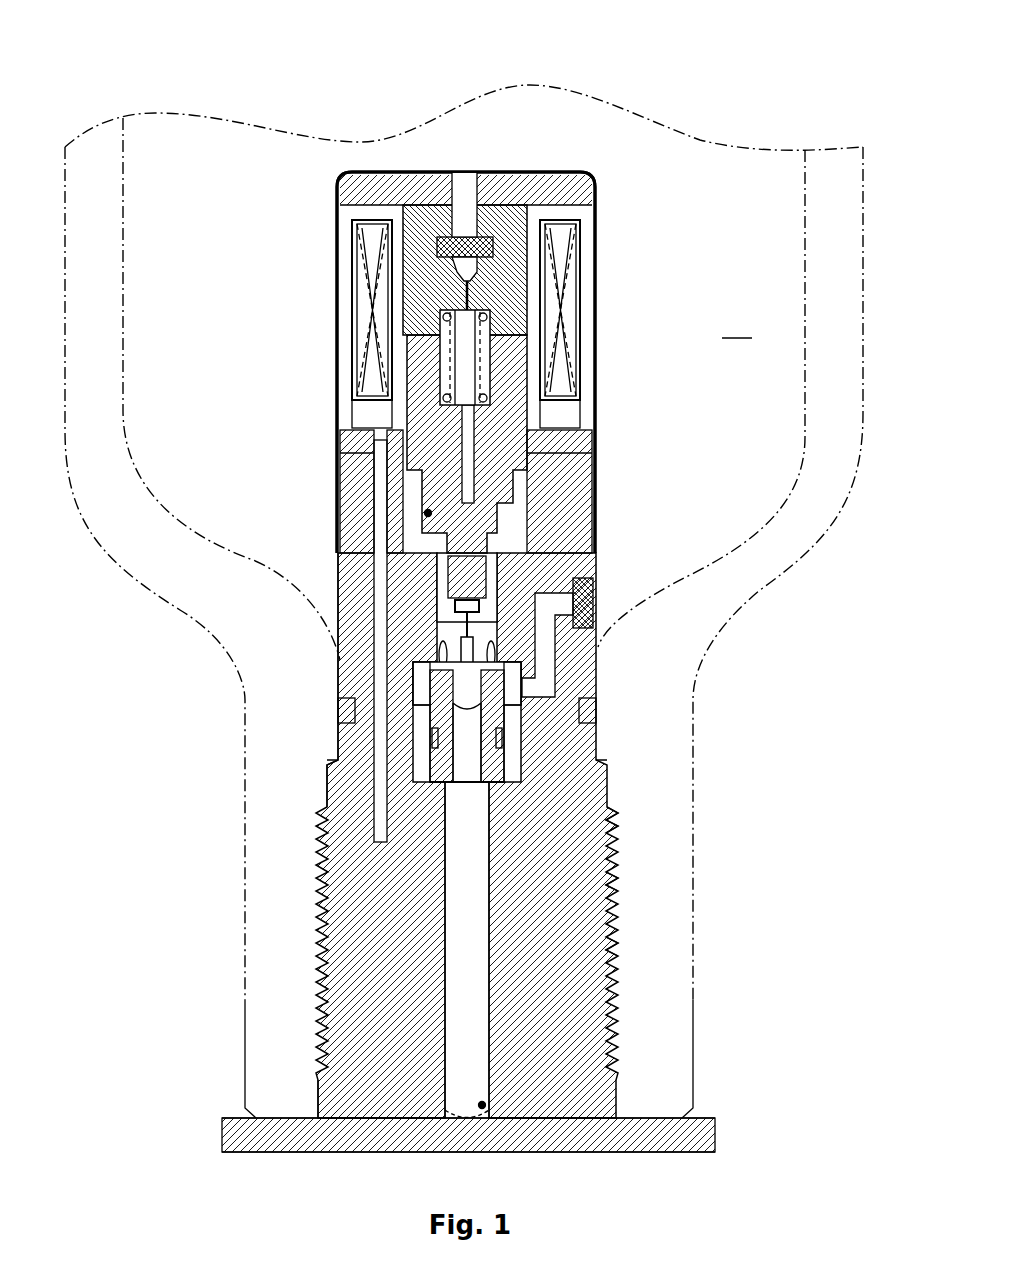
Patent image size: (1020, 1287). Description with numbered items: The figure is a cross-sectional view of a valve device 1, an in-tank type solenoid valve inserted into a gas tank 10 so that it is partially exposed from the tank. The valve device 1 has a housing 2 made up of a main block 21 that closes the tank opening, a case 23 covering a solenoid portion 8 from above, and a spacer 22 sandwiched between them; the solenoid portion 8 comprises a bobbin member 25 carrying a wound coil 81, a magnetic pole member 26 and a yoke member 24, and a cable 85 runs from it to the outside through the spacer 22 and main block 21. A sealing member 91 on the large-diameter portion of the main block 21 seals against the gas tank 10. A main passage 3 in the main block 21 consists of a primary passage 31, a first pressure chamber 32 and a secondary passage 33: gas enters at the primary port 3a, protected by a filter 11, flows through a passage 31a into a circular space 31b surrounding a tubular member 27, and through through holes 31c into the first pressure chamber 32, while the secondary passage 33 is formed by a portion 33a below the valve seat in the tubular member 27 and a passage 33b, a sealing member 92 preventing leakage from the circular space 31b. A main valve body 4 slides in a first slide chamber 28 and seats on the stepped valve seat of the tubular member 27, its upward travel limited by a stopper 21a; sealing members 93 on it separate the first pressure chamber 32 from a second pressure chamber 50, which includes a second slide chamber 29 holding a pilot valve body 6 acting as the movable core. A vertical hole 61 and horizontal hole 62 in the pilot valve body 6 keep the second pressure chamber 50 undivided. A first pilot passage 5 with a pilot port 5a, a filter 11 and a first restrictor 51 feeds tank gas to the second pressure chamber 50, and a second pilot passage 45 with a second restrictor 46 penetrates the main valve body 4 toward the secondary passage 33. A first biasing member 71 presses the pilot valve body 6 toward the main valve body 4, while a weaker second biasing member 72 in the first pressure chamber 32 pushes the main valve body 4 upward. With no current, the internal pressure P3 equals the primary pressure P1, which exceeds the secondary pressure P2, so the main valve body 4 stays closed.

The valve device 1 is at (612, 215).
The housing 2 is at (333, 207).
The main passage 3 is at (440, 1012).
The primary port 3a is at (700, 545).
The main valve body 4 is at (465, 650).
The first pilot passage 5 is at (474, 200).
The pilot port 5a is at (462, 170).
The pilot valve body 6 is at (510, 370).
The solenoid portion 8 is at (598, 268).
The gas tank 10 is at (735, 580).
The filter 11 is at (494, 206).
The main block 21 is at (362, 942).
The stopper 21a is at (437, 578).
The spacer 22 is at (420, 518).
The case 23 is at (345, 240).
The yoke member 24 is at (395, 452).
The bobbin member 25 is at (355, 430).
The magnetic pole member 26 is at (408, 218).
The tubular member 27 is at (445, 805).
The first slide chamber 28 is at (560, 533).
The second slide chamber 29 is at (565, 428).
The primary passage 31 is at (805, 705).
The passage 31a is at (520, 670).
The circular space 31b is at (518, 692).
The through holes 31c is at (502, 755).
The first pressure chamber 32 is at (345, 710).
The secondary passage 33 is at (805, 940).
The portion 33a is at (613, 885).
The passage 33b is at (613, 943).
The second pilot passage 45 is at (615, 812).
The second restrictor 46 is at (560, 648).
The second pressure chamber 50 is at (380, 522).
The first restrictor 51 is at (462, 292).
The vertical hole 61 is at (492, 395).
The horizontal hole 62 is at (591, 462).
The first biasing member 71 is at (589, 322).
The second biasing member 72 is at (440, 652).
The coil 81 is at (598, 232).
The cable 85 is at (432, 740).
The sealing member 91 is at (438, 705).
The sealing member 92 is at (440, 783).
The sealing members 93 is at (442, 618).
The primary pressure P1 is at (736, 326).
The secondary pressure P2 is at (482, 1107).
The internal pressure P3 is at (426, 512).